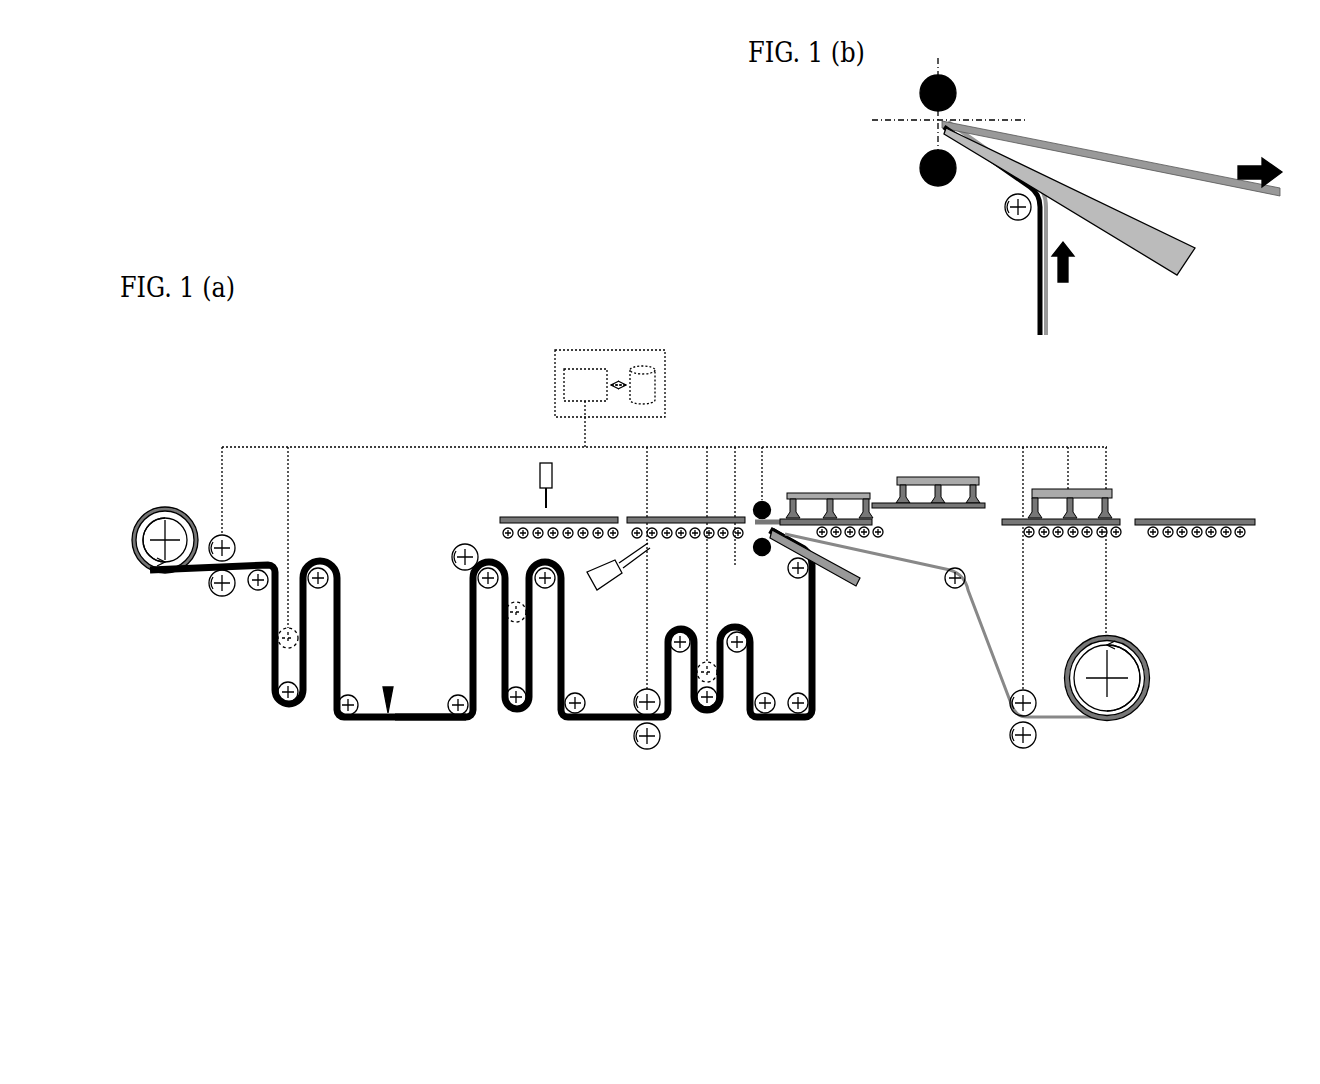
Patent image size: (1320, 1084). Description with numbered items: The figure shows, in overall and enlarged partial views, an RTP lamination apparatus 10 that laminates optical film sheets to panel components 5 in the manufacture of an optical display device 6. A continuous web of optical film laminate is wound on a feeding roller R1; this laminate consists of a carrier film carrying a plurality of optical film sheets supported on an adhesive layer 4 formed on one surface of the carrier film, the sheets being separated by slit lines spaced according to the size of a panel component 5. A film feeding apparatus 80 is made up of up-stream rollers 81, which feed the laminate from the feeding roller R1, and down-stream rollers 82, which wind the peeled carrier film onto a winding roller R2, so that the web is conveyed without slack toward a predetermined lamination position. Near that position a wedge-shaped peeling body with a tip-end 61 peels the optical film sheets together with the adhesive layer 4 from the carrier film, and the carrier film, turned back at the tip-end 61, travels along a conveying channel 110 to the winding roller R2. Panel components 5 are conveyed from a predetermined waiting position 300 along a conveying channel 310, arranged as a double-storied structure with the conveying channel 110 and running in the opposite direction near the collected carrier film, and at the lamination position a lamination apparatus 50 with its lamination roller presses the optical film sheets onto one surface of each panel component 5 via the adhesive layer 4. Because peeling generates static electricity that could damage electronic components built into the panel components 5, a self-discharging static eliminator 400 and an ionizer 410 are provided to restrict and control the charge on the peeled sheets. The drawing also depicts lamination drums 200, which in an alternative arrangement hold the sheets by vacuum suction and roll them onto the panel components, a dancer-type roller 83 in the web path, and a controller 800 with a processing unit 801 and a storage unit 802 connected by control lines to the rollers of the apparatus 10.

The adhesive layer 4 is at (424, 679).
The panel component 5 is at (1210, 518).
The optical display device 6 is at (697, 515).
The RTP lamination apparatus 10 is at (400, 372).
The lamination apparatus 50 is at (756, 488).
The tip-end 61 is at (781, 525).
The film feeding apparatus 80 is at (842, 795).
The up-stream rollers 81 is at (647, 752).
The down-stream rollers 82 is at (1008, 735).
The dancer roller 83 is at (713, 712).
The conveying channel 110 is at (890, 541).
The lamination drums 200 is at (806, 590).
The predetermined waiting position 300 is at (1081, 488).
The conveying channel 310 is at (933, 478).
The self-discharging static eliminator 400 is at (535, 483).
The ionizer 410 is at (610, 592).
The controller 800 is at (556, 385).
The processing unit 801 is at (583, 364).
The storage unit 802 is at (644, 364).
The feeding roller R1 is at (165, 508).
The winding roller R2 is at (1129, 640).